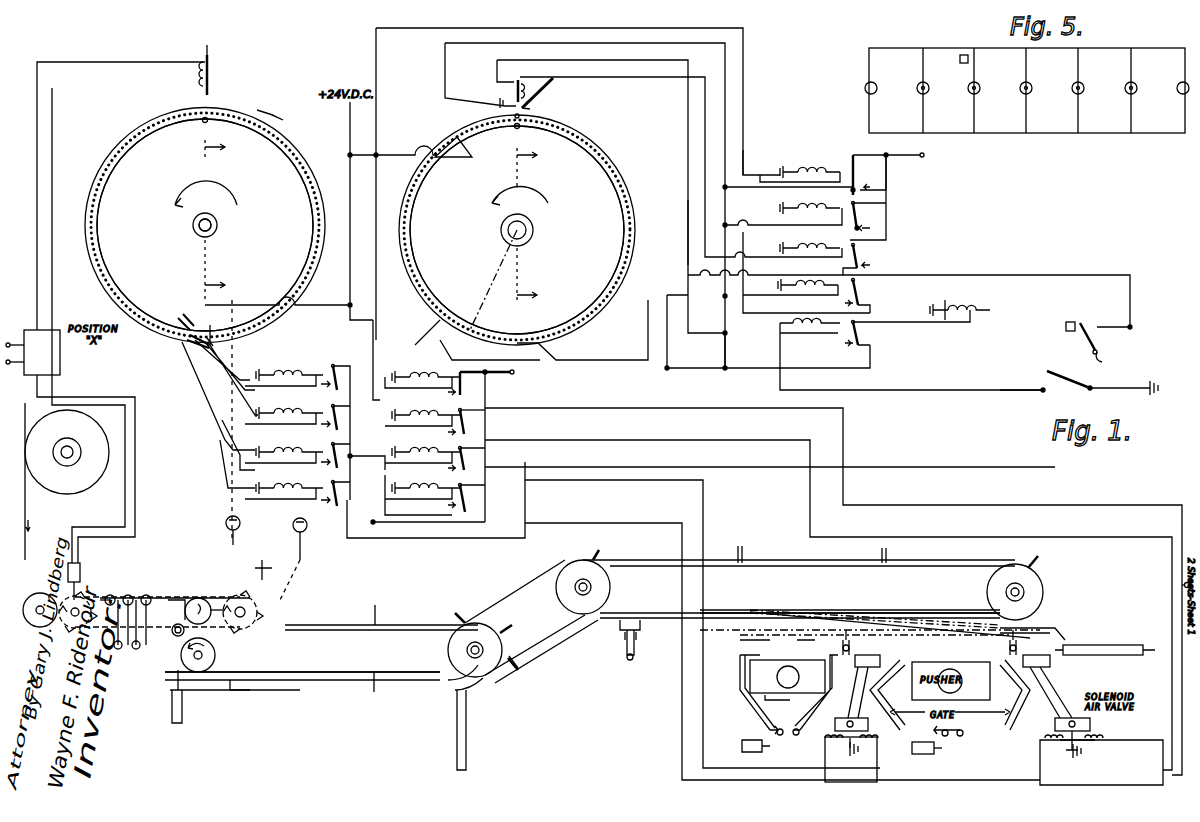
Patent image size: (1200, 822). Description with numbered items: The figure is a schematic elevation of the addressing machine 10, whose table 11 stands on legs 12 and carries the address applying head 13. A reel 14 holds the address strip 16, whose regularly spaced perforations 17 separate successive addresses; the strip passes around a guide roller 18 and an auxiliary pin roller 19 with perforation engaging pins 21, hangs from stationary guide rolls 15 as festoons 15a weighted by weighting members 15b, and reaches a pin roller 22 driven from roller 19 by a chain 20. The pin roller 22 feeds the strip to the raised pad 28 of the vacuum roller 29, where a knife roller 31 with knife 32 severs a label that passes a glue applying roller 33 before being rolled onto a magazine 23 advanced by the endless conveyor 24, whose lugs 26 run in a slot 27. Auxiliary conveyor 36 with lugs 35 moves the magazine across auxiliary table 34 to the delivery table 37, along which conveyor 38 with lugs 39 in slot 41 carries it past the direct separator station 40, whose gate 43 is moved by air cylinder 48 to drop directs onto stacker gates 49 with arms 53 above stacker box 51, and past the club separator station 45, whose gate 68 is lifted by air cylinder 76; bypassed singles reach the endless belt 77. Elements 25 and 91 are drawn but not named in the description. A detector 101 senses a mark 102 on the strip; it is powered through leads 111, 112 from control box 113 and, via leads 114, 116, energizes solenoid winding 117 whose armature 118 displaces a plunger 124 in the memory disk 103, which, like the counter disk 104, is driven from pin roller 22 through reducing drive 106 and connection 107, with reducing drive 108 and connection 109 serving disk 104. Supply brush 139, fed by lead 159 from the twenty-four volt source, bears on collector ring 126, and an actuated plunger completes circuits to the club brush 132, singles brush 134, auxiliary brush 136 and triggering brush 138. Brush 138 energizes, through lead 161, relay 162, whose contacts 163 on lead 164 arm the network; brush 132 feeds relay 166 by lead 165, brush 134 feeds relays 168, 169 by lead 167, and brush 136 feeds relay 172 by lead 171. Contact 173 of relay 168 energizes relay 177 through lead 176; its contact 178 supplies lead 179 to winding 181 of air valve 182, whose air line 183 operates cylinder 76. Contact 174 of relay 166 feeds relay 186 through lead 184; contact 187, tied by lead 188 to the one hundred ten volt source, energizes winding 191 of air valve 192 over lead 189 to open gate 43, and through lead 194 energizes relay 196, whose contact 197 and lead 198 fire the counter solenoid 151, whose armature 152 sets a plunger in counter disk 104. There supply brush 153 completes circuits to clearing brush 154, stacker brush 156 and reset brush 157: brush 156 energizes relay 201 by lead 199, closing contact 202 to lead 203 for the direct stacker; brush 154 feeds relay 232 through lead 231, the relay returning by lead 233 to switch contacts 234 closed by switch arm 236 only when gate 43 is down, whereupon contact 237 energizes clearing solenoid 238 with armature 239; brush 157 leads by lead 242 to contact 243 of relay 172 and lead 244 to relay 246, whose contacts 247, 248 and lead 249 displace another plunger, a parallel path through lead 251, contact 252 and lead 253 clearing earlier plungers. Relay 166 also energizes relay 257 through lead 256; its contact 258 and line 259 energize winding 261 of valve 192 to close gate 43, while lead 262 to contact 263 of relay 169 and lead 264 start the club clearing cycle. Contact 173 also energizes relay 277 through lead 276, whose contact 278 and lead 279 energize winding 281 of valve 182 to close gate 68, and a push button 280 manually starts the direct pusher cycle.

In FIG. 1, the apparatus 10 is at (367, 733).
In FIG. 1, the table 11 is at (205, 692).
In FIG. 1, the legs 12 is at (185, 719).
In FIG. 1, the address applying head 13 is at (262, 572).
In FIG. 1, the reel 14 is at (67, 452).
In FIG. 1, the stationary guide rolls 15 is at (144, 598).
In FIG. 1, the festoons 15a is at (112, 636).
In FIG. 1, the weighting member 15b is at (118, 647).
In FIG. 1, the address strip 16 is at (27, 487).
In FIG. 5, the address strip 16 is at (1122, 54).
In FIG. 5, the perforations 17 is at (1030, 100).
In FIG. 1, the guide roller 18 is at (42, 608).
In FIG. 1, the auxiliary pin roller 19 is at (75, 597).
In FIG. 1, the chain 20 is at (100, 600).
In FIG. 1, the perforation engaging pins 21 is at (87, 650).
In FIG. 1, the pin roller 22 is at (260, 607).
In FIG. 1, the magazines 23 is at (313, 692).
In FIG. 1, the endless conveyor 24 is at (333, 559).
In FIG. 1, the shaft 25 is at (175, 610).
In FIG. 1, the lugs 26 is at (234, 690).
In FIG. 1, the slot 27 is at (340, 688).
In FIG. 1, the raised pad 28 is at (172, 628).
In FIG. 1, the address label applying vacuum roller 29 is at (220, 648).
In FIG. 1, the knife roller 31 is at (200, 594).
In FIG. 1, the knife 32 is at (237, 594).
In FIG. 1, the glue applying roller 33 is at (173, 592).
In FIG. 1, the auxiliary table 34 is at (558, 646).
In FIG. 1, the lugs 35 is at (473, 613).
In FIG. 1, the auxiliary endless conveyor 36 is at (545, 573).
In FIG. 1, the delivery table 37 is at (1043, 628).
In FIG. 1, the endless conveyor 38 is at (821, 566).
In FIG. 1, the lugs 39 is at (745, 544).
In FIG. 1, the direct separator station 40 is at (738, 580).
In FIG. 1, the slot 41 is at (636, 642).
In FIG. 1, the direct separator gate 43 is at (793, 600).
In FIG. 1, the club separator station 45 is at (868, 582).
In FIG. 1, the double acting air operated cylinder 48 is at (868, 653).
In FIG. 1, the direct stacker gates 49 is at (755, 648).
In FIG. 1, the direct stacker box 51 is at (764, 698).
In FIG. 1, the arms 53 is at (730, 685).
In FIG. 1, the club separator gate 68 is at (916, 616).
In FIG. 1, the double acting air cylinder 76 is at (1050, 668).
In FIG. 1, the endless belt 77 is at (1129, 645).
In FIG. 1, the air lines 91 is at (881, 678).
In FIG. 1, the detector 101 is at (68, 566).
In FIG. 5, the mark 102 is at (960, 53).
In FIG. 1, the memory disk 103 is at (205, 225).
In FIG. 1, the counter disk 104 is at (517, 229).
In FIG. 1, the reducing drive 106 is at (240, 516).
In FIG. 1, the mechanical connection 107 is at (232, 504).
In FIG. 1, the reducing drive 108 is at (308, 536).
In FIG. 1, the mechanical connection 109 is at (313, 576).
In FIG. 1, the power lead 111 is at (17, 334).
In FIG. 1, the power lead 112 is at (17, 375).
In FIG. 1, the control box 113 is at (68, 370).
In FIG. 1, the lead 114 is at (53, 190).
In FIG. 1, the lead 116 is at (37, 218).
In FIG. 1, the solenoid winding 117 is at (218, 76).
In FIG. 1, the armature 118 is at (210, 56).
In FIG. 1, the pin or plunger 124 is at (283, 114).
In FIG. 1, the collector ring 126 is at (190, 220).
In FIG. 1, the club brush 132 is at (115, 145).
In FIG. 1, the singles brush 134 is at (185, 344).
In FIG. 1, the auxiliary brush 136 is at (180, 305).
In FIG. 1, the triggering brush 138 is at (208, 342).
In FIG. 1, the supply brush 139 is at (97, 215).
In FIG. 1, the counter solenoid 151 is at (505, 87).
In FIG. 1, the armature 152 is at (518, 77).
In FIG. 1, the supply brush 153 is at (418, 188).
In FIG. 1, the clearing brush 154 is at (510, 114).
In FIG. 1, the stacker brush 156 is at (531, 108).
In FIG. 1, the reset brush 157 is at (560, 348).
In FIG. 1, the lead 159 is at (350, 152).
In FIG. 1, the lead 161 is at (240, 366).
In FIG. 1, the relay winding 162 is at (290, 365).
In FIG. 1, the contacts 163 is at (328, 368).
In FIG. 1, the lead 164 is at (350, 292).
In FIG. 1, the lead 165 is at (200, 398).
In FIG. 1, the relay winding 166 is at (292, 446).
In FIG. 1, the lead 167 is at (210, 408).
In FIG. 1, the relay winding 168 is at (292, 408).
In FIG. 1, the relay winding 169 is at (292, 484).
In FIG. 1, the lead 171 is at (246, 305).
In FIG. 1, the relay winding 172 is at (807, 283).
In FIG. 1, the contact 173 is at (335, 410).
In FIG. 1, the contact 174 is at (334, 451).
In FIG. 1, the lead 176 is at (370, 386).
In FIG. 1, the relay winding 177 is at (417, 372).
In FIG. 1, the contact 178 is at (466, 398).
In FIG. 1, the lead 179 is at (628, 410).
In FIG. 1, the winding 181 is at (1093, 747).
In FIG. 1, the solenoid operated air valve 182 is at (1088, 724).
In FIG. 1, the air line 183 is at (1068, 702).
In FIG. 1, the lead 184 is at (375, 458).
In FIG. 1, the relay winding 186 is at (425, 456).
In FIG. 1, the contact 187 is at (470, 457).
In FIG. 1, the lead 188 is at (473, 431).
In FIG. 1, the lead 189 is at (640, 478).
In FIG. 1, the winding 191 is at (860, 757).
In FIG. 1, the solenoid operated air valve 192 is at (888, 750).
In FIG. 1, the lead 194 is at (588, 28).
In FIG. 1, the relay winding 196 is at (810, 170).
In FIG. 1, the contact 197 is at (855, 162).
In FIG. 1, the lead 198 is at (760, 156).
In FIG. 1, the lead 199 is at (643, 78).
In FIG. 1, the relay winding 201 is at (805, 243).
In FIG. 1, the contact 202 is at (890, 263).
In FIG. 1, the lead 203 is at (977, 277).
In FIG. 1, the lead 231 is at (670, 47).
In FIG. 1, the relay winding 232 is at (820, 330).
In FIG. 1, the lead 233 is at (880, 390).
In FIG. 1, the switch contacts 234 is at (1025, 393).
In FIG. 1, the switch arm 236 is at (1031, 377).
In FIG. 1, the contact 237 is at (875, 332).
In FIG. 1, the clearing solenoid 238 is at (978, 298).
In FIG. 1, the armature 239 is at (970, 311).
In FIG. 1, the lead 242 is at (627, 355).
In FIG. 1, the contact 243 is at (903, 304).
In FIG. 1, the lead 244 is at (757, 210).
In FIG. 1, the relay winding 246 is at (807, 206).
In FIG. 1, the contact 247 is at (888, 215).
In FIG. 1, the contact 248 is at (888, 240).
In FIG. 1, the lead 249 is at (725, 208).
In FIG. 1, the lead 251 is at (728, 348).
In FIG. 1, the contact 252 is at (875, 352).
In FIG. 1, the lead 253 is at (888, 190).
In FIG. 1, the lead 256 is at (398, 497).
In FIG. 1, the relay winding 257 is at (423, 488).
In FIG. 1, the contact 258 is at (473, 501).
In FIG. 1, the line 259 is at (618, 523).
In FIG. 1, the winding 261 is at (825, 780).
In FIG. 1, the lead 262 is at (383, 538).
In FIG. 1, the contact 263 is at (326, 497).
In FIG. 1, the lead 264 is at (1032, 468).
In FIG. 1, the lead 276 is at (388, 420).
In FIG. 1, the relay winding 277 is at (422, 415).
In FIG. 1, the contact 278 is at (483, 420).
In FIG. 1, the lead 279 is at (718, 440).
In FIG. 1, the push button 280 is at (1068, 336).
In FIG. 1, the winding 281 is at (1042, 736).